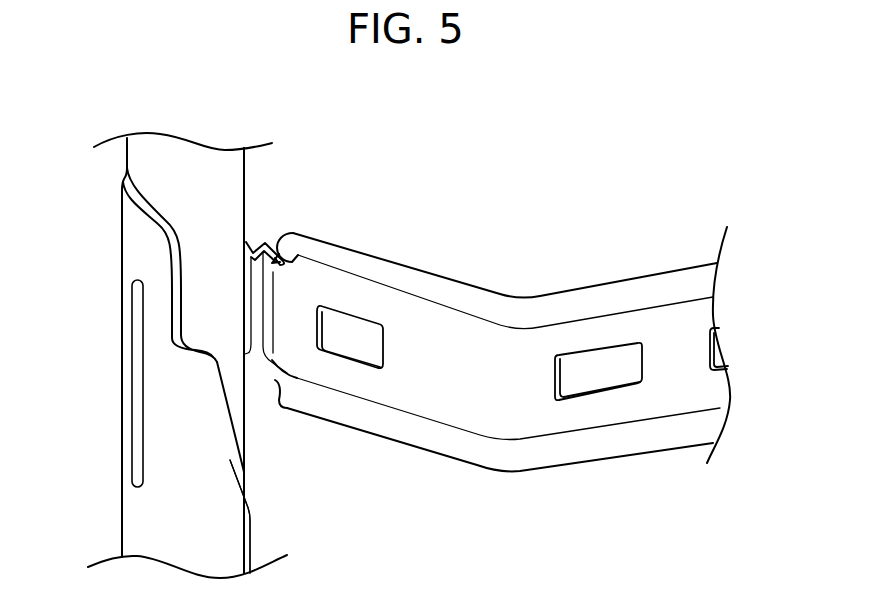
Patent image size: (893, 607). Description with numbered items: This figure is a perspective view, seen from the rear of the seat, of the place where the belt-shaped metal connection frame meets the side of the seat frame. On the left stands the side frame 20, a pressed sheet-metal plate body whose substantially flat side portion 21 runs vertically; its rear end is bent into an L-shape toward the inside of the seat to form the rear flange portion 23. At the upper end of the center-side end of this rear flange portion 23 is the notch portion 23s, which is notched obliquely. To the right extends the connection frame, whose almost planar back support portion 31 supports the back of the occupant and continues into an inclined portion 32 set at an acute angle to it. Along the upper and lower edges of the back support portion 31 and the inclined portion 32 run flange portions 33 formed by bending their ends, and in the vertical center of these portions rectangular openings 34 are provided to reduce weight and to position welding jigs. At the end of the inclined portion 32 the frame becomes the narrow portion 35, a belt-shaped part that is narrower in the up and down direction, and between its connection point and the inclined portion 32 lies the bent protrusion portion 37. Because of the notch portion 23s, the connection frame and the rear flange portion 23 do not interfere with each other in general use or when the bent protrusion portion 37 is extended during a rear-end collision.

The side frame 20 is at (92, 511).
The side portion 21 is at (130, 243).
The rear flange portion 23 is at (227, 521).
The notch portion 23s is at (224, 380).
The back support portion 31 is at (702, 313).
The inclined portion 32 is at (415, 320).
The flange portion 33 is at (698, 275).
The opening 34 is at (725, 358).
The narrow portion 35 is at (296, 286).
The bent protrusion portion 37 is at (257, 241).